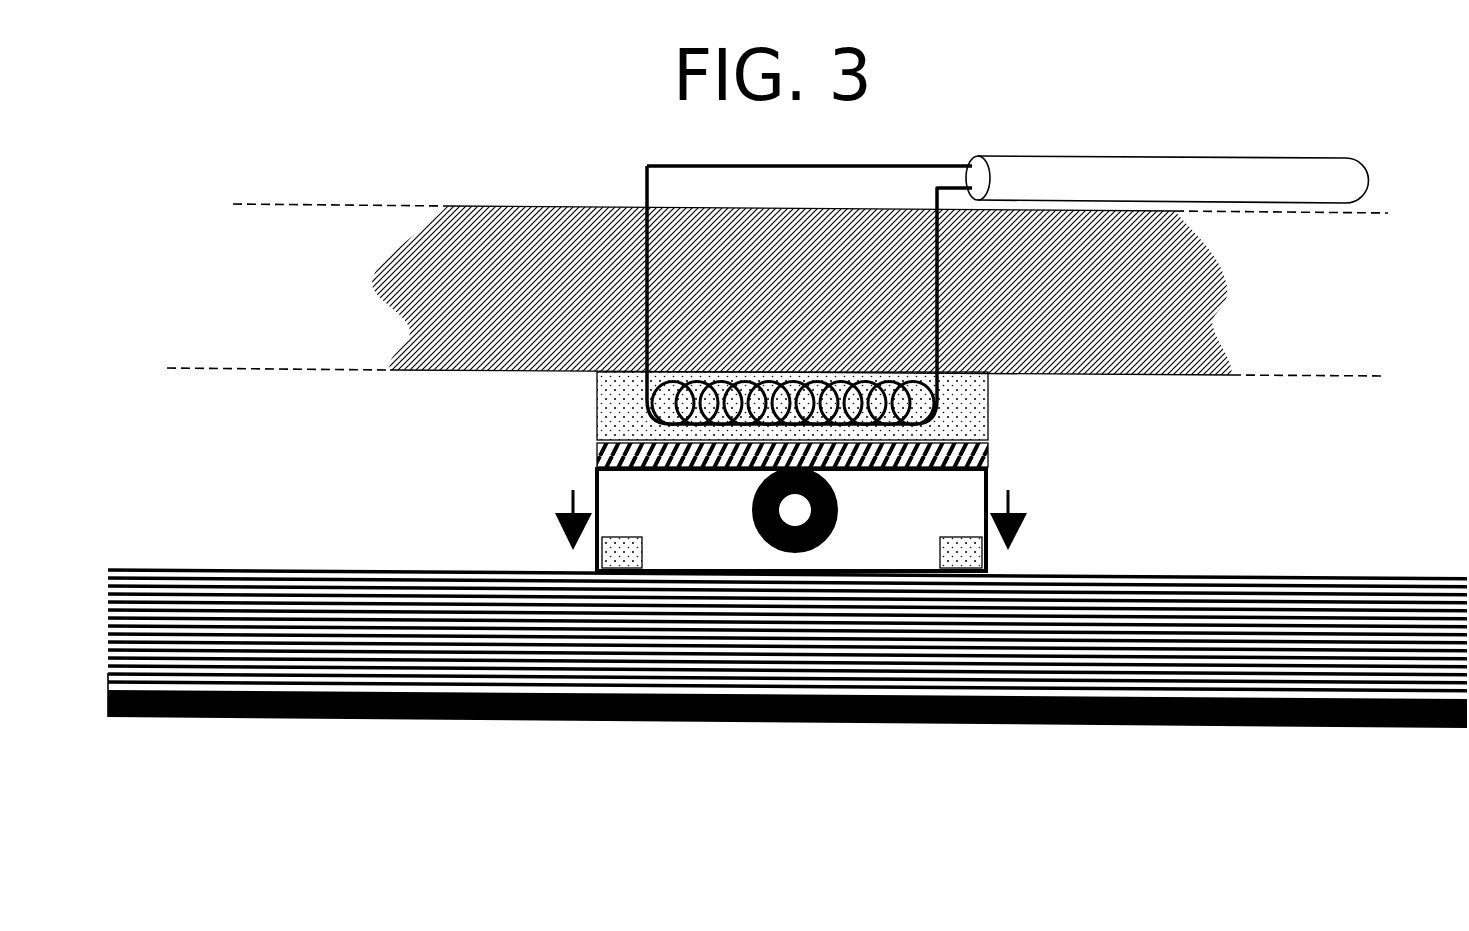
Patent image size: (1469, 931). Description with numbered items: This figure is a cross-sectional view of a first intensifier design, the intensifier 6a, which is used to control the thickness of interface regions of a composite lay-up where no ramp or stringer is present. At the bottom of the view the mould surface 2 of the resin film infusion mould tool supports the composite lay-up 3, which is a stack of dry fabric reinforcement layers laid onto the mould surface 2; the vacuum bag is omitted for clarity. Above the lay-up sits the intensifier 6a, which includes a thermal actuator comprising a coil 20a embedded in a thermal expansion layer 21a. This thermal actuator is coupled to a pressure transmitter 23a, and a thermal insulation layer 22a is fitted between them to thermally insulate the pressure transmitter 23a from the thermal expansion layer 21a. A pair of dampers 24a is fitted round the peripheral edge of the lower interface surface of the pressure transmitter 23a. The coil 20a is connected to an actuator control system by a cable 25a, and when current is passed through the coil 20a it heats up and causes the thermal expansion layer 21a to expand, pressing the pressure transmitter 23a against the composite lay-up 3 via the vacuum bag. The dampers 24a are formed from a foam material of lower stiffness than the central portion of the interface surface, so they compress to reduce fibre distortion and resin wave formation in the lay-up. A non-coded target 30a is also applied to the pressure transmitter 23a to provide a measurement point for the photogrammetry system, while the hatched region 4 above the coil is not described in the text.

The mould surface 2 is at (218, 690).
The composite lay-up 3 is at (718, 640).
The workpiece 4 is at (673, 253).
The intensifier 6a is at (1192, 484).
The coil 20a is at (769, 403).
The thermal expansion layer 21a is at (623, 422).
The cover plate 22a is at (963, 457).
The pressure transmitter 23a is at (668, 513).
The dampers 24a is at (625, 552).
The cable 25a is at (1228, 180).
The non-coded target 30a is at (830, 540).